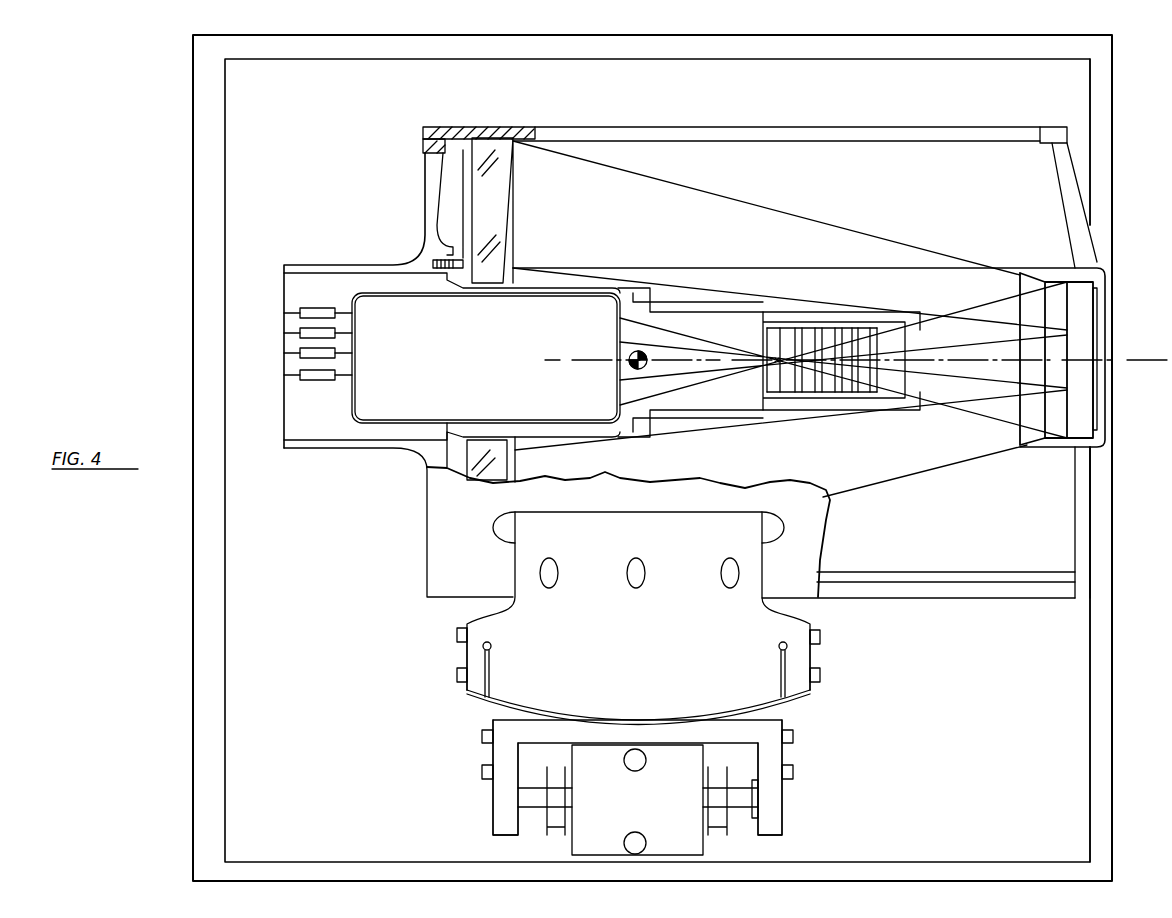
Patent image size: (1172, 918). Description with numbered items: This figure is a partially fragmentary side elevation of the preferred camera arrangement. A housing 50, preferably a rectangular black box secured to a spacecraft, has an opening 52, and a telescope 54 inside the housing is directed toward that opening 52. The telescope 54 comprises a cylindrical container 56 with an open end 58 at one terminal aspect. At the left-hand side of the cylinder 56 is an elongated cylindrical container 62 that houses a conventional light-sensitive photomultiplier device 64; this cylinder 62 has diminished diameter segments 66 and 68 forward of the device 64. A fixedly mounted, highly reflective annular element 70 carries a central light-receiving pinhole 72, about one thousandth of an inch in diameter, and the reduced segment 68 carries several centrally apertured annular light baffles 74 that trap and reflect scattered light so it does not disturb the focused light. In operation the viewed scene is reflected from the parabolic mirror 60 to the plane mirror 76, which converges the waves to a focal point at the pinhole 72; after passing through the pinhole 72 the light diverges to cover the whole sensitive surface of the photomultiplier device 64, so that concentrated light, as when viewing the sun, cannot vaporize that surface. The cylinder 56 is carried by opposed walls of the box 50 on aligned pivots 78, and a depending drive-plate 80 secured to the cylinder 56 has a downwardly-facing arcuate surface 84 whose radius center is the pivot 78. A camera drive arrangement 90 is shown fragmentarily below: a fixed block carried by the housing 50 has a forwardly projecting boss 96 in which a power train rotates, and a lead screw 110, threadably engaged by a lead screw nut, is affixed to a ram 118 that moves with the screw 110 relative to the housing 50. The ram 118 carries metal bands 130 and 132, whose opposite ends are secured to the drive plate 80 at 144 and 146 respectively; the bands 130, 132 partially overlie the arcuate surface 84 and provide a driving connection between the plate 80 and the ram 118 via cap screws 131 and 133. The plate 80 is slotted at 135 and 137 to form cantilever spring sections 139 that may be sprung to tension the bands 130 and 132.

The housing 50 is at (1035, 48).
The opening 52 is at (1098, 626).
The telescope 54 is at (760, 118).
The cylindrical container 56 is at (928, 127).
The open end 58 is at (1060, 150).
The parabolic mirror 60 is at (500, 203).
The elongated cylindrical container 62 is at (333, 264).
The photomultiplier device 64 is at (492, 369).
The diminished diameter segment 66 is at (697, 303).
The diminished diameter segment 68 is at (855, 322).
The annular element 70 is at (790, 332).
The pinhole 72 is at (783, 364).
The annular light baffles 74 is at (852, 398).
The plane mirror 76 is at (1080, 334).
The pivot 78 is at (629, 364).
The drive-plate 80 is at (647, 684).
The arcuate surface 84 is at (510, 706).
The camera drive arrangement 90 is at (730, 840).
The boss 96 is at (622, 811).
The lead screw 110 is at (530, 797).
The ram 118 is at (770, 819).
The metal band 130 is at (492, 722).
The cap screw 131 is at (457, 635).
The metal band 132 is at (784, 722).
The cap screw 133 is at (482, 772).
The slot 135 is at (495, 674).
The slot 137 is at (781, 661).
The cantilever spring section 139 is at (467, 686).
The band securing point 144 is at (818, 664).
The band securing point 146 is at (457, 650).